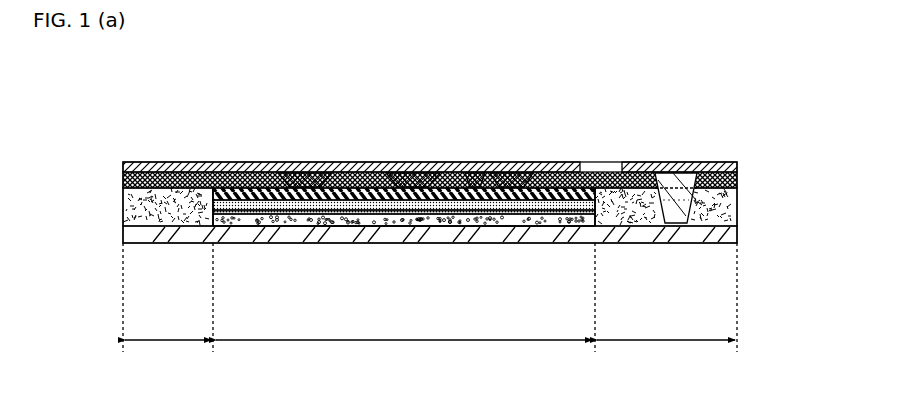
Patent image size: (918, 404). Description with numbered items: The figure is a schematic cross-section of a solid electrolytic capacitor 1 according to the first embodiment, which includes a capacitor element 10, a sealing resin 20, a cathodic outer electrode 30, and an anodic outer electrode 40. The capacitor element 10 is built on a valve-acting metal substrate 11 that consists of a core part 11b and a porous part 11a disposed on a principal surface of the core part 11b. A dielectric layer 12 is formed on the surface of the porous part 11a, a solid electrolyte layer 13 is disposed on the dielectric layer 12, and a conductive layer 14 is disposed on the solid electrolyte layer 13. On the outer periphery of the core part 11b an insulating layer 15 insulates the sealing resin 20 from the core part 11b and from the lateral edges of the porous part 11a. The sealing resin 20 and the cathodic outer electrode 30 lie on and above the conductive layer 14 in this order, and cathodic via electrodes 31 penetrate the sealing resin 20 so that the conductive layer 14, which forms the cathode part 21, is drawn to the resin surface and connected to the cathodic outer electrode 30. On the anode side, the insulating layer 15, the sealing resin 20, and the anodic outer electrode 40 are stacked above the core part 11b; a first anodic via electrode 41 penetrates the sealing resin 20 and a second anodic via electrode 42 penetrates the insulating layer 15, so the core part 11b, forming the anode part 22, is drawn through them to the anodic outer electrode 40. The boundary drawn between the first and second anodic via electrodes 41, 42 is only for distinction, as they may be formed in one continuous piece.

The solid electrolytic capacitor 1 is at (686, 99).
The capacitor element 10 is at (750, 231).
The valve-acting metal substrate 11 is at (572, 287).
The porous part 11a is at (470, 218).
The core part 11b is at (534, 225).
The dielectric layer 12 is at (378, 212).
The solid electrolyte layer 13 is at (325, 205).
The conductive layer 14 is at (264, 200).
The insulating layer 15 is at (192, 222).
The sealing resin 20 is at (600, 172).
The cathode part 21 is at (404, 308).
The anode part 22 is at (430, 308).
The cathodic outer electrode 30 is at (200, 170).
The cathodic via electrodes 31 is at (487, 178).
The anodic outer electrode 40 is at (705, 171).
The first anodic via electrode 41 is at (700, 181).
The second anodic via electrode 42 is at (680, 196).